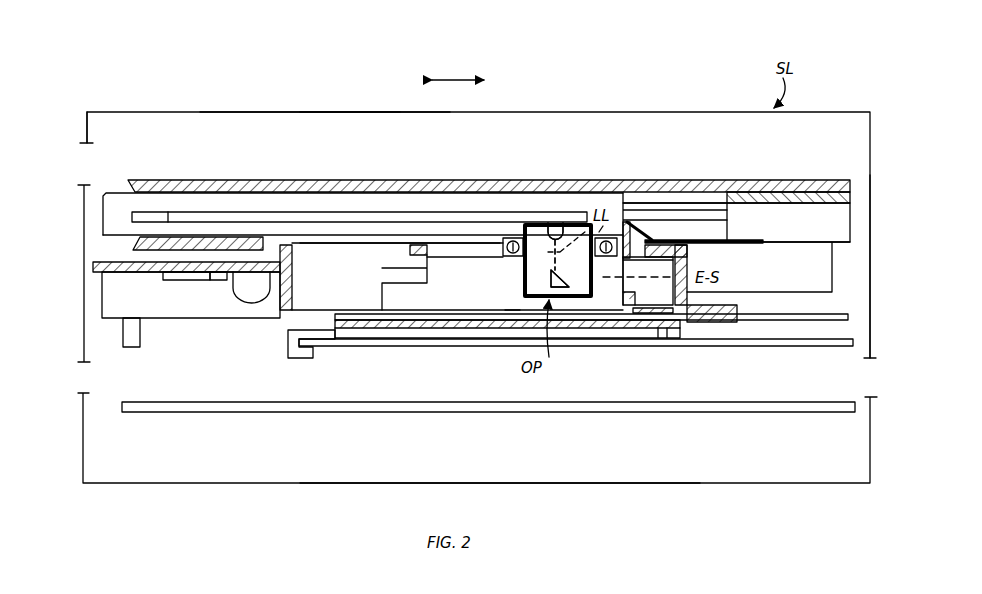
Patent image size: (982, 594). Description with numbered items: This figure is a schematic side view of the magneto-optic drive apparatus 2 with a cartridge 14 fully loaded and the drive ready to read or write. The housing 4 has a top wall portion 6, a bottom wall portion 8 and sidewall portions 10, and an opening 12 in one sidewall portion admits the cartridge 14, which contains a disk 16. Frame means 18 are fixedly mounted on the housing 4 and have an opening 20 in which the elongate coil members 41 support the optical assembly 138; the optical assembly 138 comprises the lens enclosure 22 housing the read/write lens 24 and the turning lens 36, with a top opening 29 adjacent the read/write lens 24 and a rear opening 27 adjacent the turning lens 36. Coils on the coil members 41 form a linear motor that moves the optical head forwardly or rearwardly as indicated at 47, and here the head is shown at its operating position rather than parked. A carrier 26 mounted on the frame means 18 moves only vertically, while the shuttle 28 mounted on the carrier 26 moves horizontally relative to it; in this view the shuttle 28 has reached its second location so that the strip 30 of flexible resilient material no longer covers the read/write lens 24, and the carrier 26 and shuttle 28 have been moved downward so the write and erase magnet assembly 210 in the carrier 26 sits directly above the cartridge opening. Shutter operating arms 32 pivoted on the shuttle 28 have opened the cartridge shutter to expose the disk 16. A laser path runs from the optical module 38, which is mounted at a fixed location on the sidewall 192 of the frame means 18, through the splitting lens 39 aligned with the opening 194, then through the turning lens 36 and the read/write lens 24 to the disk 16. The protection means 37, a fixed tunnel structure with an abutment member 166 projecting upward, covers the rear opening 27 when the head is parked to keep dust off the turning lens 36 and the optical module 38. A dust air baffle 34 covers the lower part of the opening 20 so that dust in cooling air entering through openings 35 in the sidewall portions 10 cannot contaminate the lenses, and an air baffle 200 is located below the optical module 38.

The magneto-optic drive apparatus 2 is at (185, 94).
The housing 4 is at (773, 486).
The top wall portion 6 is at (355, 110).
The bottom wall portion 8 is at (612, 484).
The sidewall portions 10 is at (84, 352).
The opening 12 is at (84, 146).
The cartridge 14 is at (104, 193).
The disk 16 is at (132, 217).
The frame means 18 is at (108, 288).
The opening 20 is at (459, 296).
The lens enclosure 22 is at (510, 240).
The read/write lens 24 is at (572, 226).
The carrier 26 is at (232, 180).
The rear opening 27 is at (589, 300).
The shuttle 28 is at (778, 186).
The top opening 29 is at (550, 238).
The strip of flexible resilient material 30 is at (647, 231).
The shutter operating arms 32 is at (680, 208).
The dust air baffle 34 is at (387, 330).
The openings 35 is at (82, 379).
The turning lens 36 is at (523, 278).
The protection means 37 is at (624, 262).
The optical module 38 is at (833, 272).
The splitting lens 39 is at (735, 268).
The coil member 41 is at (441, 242).
The forward and rearward movement 47 is at (465, 80).
The optical assembly 138 is at (512, 304).
The abutment member 166 is at (630, 236).
The sidewall 192 is at (688, 258).
The opening 194 is at (688, 278).
The air baffle 200 is at (783, 341).
The write and erase magnet assembly 210 is at (558, 228).